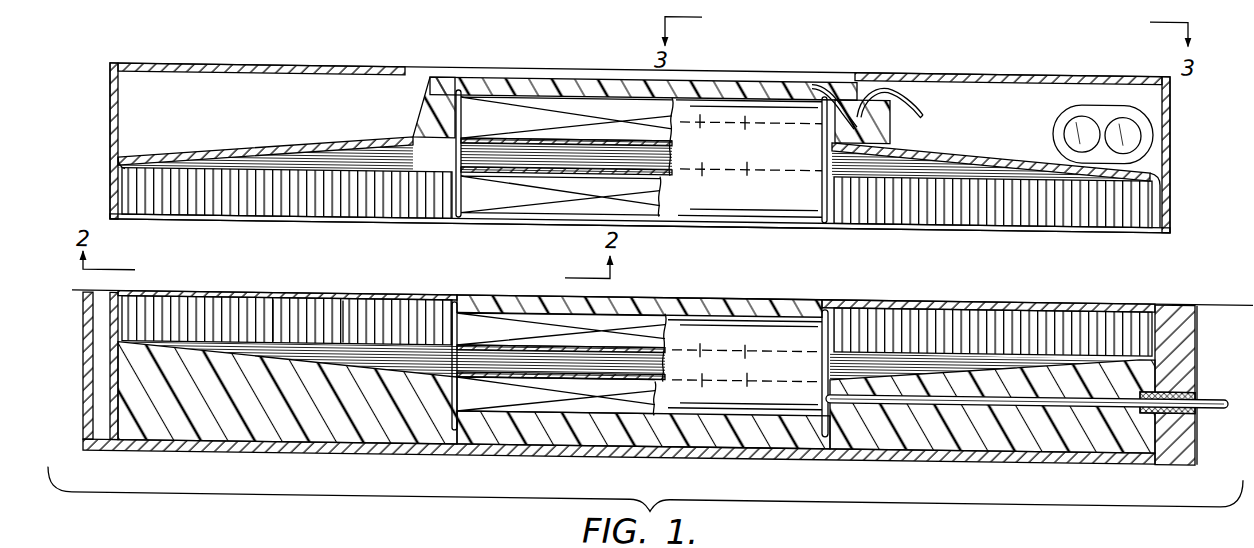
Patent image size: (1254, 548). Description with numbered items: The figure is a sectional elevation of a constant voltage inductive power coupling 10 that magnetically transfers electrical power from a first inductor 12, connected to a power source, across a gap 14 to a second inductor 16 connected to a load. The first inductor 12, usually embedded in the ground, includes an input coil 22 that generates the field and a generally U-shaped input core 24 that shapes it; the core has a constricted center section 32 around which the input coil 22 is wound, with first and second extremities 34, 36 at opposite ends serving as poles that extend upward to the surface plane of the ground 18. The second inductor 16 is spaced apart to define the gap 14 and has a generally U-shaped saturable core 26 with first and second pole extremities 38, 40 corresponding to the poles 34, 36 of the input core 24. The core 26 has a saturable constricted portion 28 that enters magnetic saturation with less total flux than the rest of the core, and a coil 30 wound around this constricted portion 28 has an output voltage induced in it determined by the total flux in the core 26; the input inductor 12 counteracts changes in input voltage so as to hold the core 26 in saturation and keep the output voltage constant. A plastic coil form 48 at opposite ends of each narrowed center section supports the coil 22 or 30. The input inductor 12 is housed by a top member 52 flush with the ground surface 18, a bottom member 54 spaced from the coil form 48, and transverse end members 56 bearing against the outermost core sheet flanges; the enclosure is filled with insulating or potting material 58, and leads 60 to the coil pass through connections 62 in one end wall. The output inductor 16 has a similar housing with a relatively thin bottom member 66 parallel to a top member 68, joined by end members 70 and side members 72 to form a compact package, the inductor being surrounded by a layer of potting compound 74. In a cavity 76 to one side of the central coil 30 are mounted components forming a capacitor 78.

The constant voltage inductive power coupling 10 is at (874, 50).
The first inductor 12 is at (1151, 287).
The gap 14 is at (425, 218).
The second inductor 16 is at (1181, 203).
The surface plane of the ground 18 is at (1211, 286).
The input coil 22 is at (533, 386).
The input core 24 is at (207, 307).
The saturable core 26 is at (880, 195).
The saturable constricted portion 28 is at (543, 153).
The coil 30 is at (523, 104).
The center section 32 is at (600, 348).
The first extremity 34 is at (273, 296).
The second extremity 36 is at (918, 294).
The first pole extremity 38 is at (213, 219).
The second pole extremity 40 is at (1104, 214).
The plastic coil form 48 is at (453, 84).
The top member 52 is at (343, 288).
The bottom member 54 is at (838, 437).
The transverse end members 56 is at (1182, 325).
The insulating or potting material 58 is at (907, 420).
The leads 60 is at (1005, 383).
The connections 62 is at (1210, 394).
The bottom member 66 is at (975, 197).
The top member 68 is at (972, 66).
The end members 70 is at (1170, 145).
The side members 72 is at (231, 116).
The potting compound 74 is at (418, 109).
The cavity 76 is at (1042, 83).
The capacitor 78 is at (1140, 112).